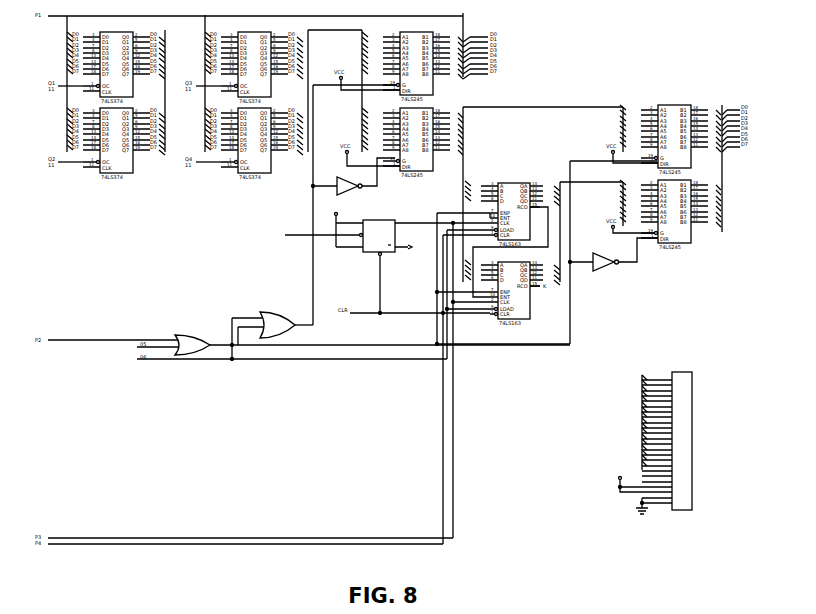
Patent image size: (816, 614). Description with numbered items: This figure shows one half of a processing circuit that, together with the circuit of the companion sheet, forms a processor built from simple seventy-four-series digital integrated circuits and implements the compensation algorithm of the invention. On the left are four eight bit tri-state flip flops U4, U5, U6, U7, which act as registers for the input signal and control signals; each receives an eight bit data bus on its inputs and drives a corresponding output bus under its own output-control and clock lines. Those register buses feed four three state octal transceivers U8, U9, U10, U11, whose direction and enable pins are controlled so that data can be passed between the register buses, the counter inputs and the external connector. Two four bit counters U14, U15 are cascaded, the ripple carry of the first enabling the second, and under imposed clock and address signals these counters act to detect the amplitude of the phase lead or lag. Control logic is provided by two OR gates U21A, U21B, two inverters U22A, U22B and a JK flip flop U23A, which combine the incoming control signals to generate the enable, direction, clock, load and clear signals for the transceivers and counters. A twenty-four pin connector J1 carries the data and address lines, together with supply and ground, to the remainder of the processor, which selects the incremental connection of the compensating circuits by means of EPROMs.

The 8 bit tri-state flip flop U4 is at (116, 64).
The 8 bit tri-state flip flop U5 is at (116, 140).
The 8 bit tri-state flip flop U6 is at (254, 64).
The 8 bit tri-state flip flop U7 is at (254, 140).
The 3 state octal transceiver U8 is at (412, 63).
The 3 state octal transceiver U9 is at (412, 139).
The 3 state octal transceiver U10 is at (670, 136).
The 3 state octal transceiver U11 is at (670, 211).
The 4 bit counter U14 is at (512, 211).
The 4 bit counter U15 is at (512, 290).
The 74LS32 OR gate U21A is at (194, 346).
The 74LS32 OR gate U21B is at (279, 325).
The 74LS04 inverter U22A is at (354, 180).
The 74LS04 inverter U22B is at (614, 258).
The 74LS107 JK flip-flop U23A is at (340, 260).
The CON24 connector J1 is at (652, 441).